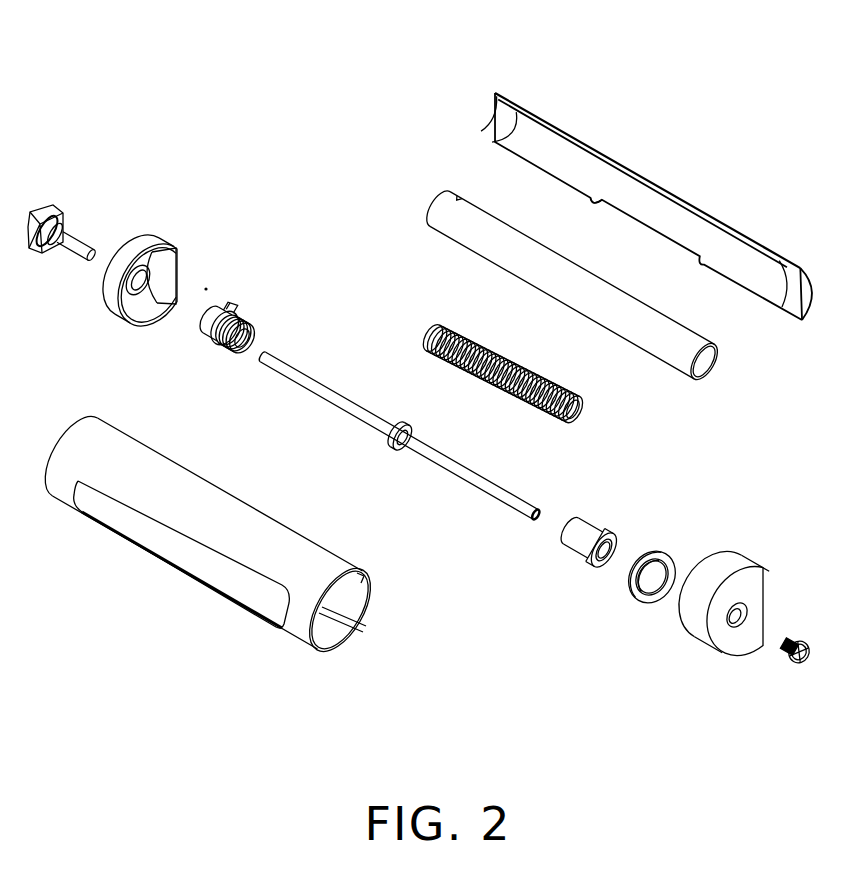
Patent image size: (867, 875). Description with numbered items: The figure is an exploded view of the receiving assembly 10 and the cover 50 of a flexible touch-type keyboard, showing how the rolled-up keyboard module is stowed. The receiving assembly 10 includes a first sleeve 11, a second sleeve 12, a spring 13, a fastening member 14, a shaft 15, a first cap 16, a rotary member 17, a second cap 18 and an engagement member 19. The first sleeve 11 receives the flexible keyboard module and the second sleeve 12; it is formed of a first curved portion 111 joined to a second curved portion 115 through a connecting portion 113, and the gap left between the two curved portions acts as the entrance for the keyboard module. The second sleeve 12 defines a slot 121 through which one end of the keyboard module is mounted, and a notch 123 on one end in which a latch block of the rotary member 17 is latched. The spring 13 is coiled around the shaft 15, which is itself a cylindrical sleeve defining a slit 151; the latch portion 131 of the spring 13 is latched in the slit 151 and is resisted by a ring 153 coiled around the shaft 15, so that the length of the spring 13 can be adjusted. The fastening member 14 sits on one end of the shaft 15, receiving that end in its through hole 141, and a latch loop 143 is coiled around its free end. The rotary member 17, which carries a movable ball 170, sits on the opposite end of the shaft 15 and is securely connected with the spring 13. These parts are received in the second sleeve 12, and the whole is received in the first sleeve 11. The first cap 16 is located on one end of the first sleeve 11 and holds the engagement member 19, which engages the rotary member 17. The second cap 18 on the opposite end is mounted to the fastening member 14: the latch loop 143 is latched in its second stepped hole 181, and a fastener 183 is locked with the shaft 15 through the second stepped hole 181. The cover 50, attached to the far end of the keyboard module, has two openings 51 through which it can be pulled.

The receiving assembly 10 is at (192, 90).
The first sleeve 11 is at (78, 402).
The first curved portion 111 is at (268, 537).
The connecting portion 113 is at (364, 577).
The second curved portion 115 is at (358, 604).
The second sleeve 12 is at (438, 216).
The slot 121 is at (721, 354).
The notch 123 is at (444, 193).
The spring 13 is at (458, 326).
The latch portion 131 is at (574, 412).
The fastening member 14 is at (617, 533).
The through hole 141 is at (592, 565).
The latch loop 143 is at (653, 553).
The shaft 15 is at (337, 397).
The slit 151 is at (540, 524).
The ring 153 is at (410, 421).
The first cap 16 is at (148, 243).
The rotary member 17 is at (208, 342).
The ball 170 is at (208, 287).
The second cap 18 is at (750, 590).
The second stepped hole 181 is at (733, 622).
The fastener 183 is at (801, 642).
The engagement member 19 is at (72, 243).
The cover 50 is at (608, 87).
The openings 51 is at (648, 228).